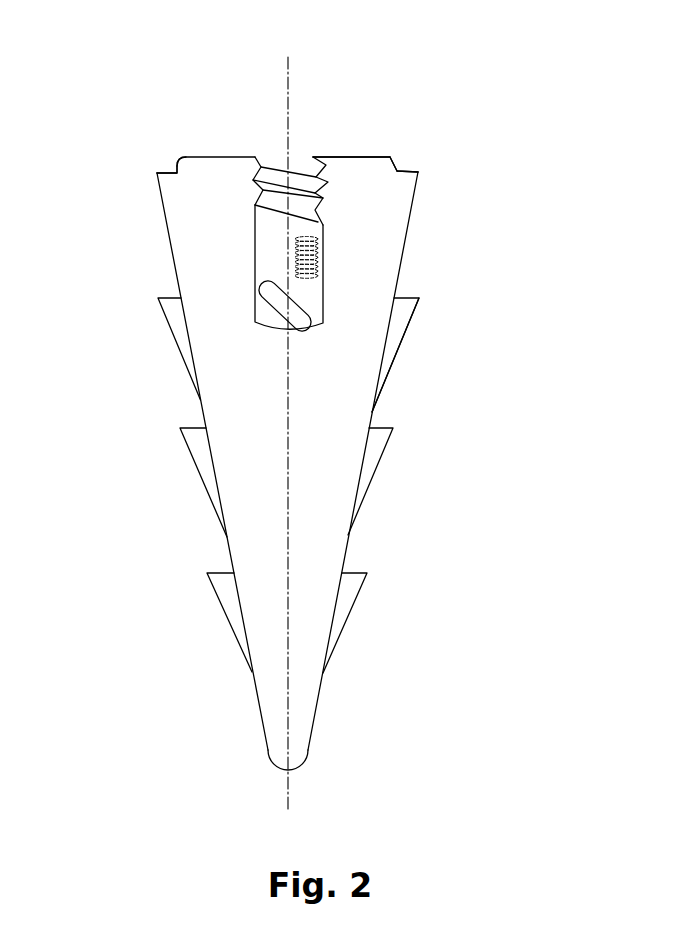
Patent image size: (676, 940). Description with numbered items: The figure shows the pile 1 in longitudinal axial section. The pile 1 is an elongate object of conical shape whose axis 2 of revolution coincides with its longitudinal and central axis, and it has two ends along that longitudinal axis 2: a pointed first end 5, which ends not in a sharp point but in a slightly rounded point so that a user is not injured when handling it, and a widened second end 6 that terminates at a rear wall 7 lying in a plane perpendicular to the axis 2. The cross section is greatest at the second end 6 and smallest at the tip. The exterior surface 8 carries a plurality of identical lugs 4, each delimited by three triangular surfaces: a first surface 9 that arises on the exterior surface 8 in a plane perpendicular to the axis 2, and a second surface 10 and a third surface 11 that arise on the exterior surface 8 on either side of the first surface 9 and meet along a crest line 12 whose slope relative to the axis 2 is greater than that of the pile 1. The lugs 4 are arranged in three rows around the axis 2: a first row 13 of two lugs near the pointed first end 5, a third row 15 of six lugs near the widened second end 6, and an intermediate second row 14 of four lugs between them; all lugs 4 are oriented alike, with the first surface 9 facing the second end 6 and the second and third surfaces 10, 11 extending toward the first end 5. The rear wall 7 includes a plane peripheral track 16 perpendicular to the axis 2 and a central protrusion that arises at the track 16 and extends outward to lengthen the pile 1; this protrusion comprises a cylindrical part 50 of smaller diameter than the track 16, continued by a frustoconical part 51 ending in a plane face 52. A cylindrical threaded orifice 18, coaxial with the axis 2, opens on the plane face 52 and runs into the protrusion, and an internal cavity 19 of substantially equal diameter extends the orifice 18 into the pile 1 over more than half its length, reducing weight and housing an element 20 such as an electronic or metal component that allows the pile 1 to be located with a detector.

The pile 1 is at (132, 388).
The longitudinal axis 2 is at (288, 123).
The lugs 4 is at (422, 324).
The first end 5 is at (277, 732).
The second end 6 is at (393, 166).
The rear wall 7 is at (233, 148).
The exterior surface 8 is at (343, 423).
The first surface 9 is at (410, 297).
The second surface 10 is at (388, 352).
The third surface 11 is at (395, 355).
The crest line 12 is at (380, 467).
The first row 13 is at (370, 617).
The second row 14 is at (168, 476).
The third row 15 is at (152, 327).
The peripheral track 16 is at (172, 168).
The threaded orifice 18 is at (322, 176).
The internal cavity 19 is at (272, 247).
The element 20 is at (325, 305).
The cylindrical part 50 is at (403, 170).
The frustoconical part 51 is at (184, 155).
The plane face 52 is at (353, 156).